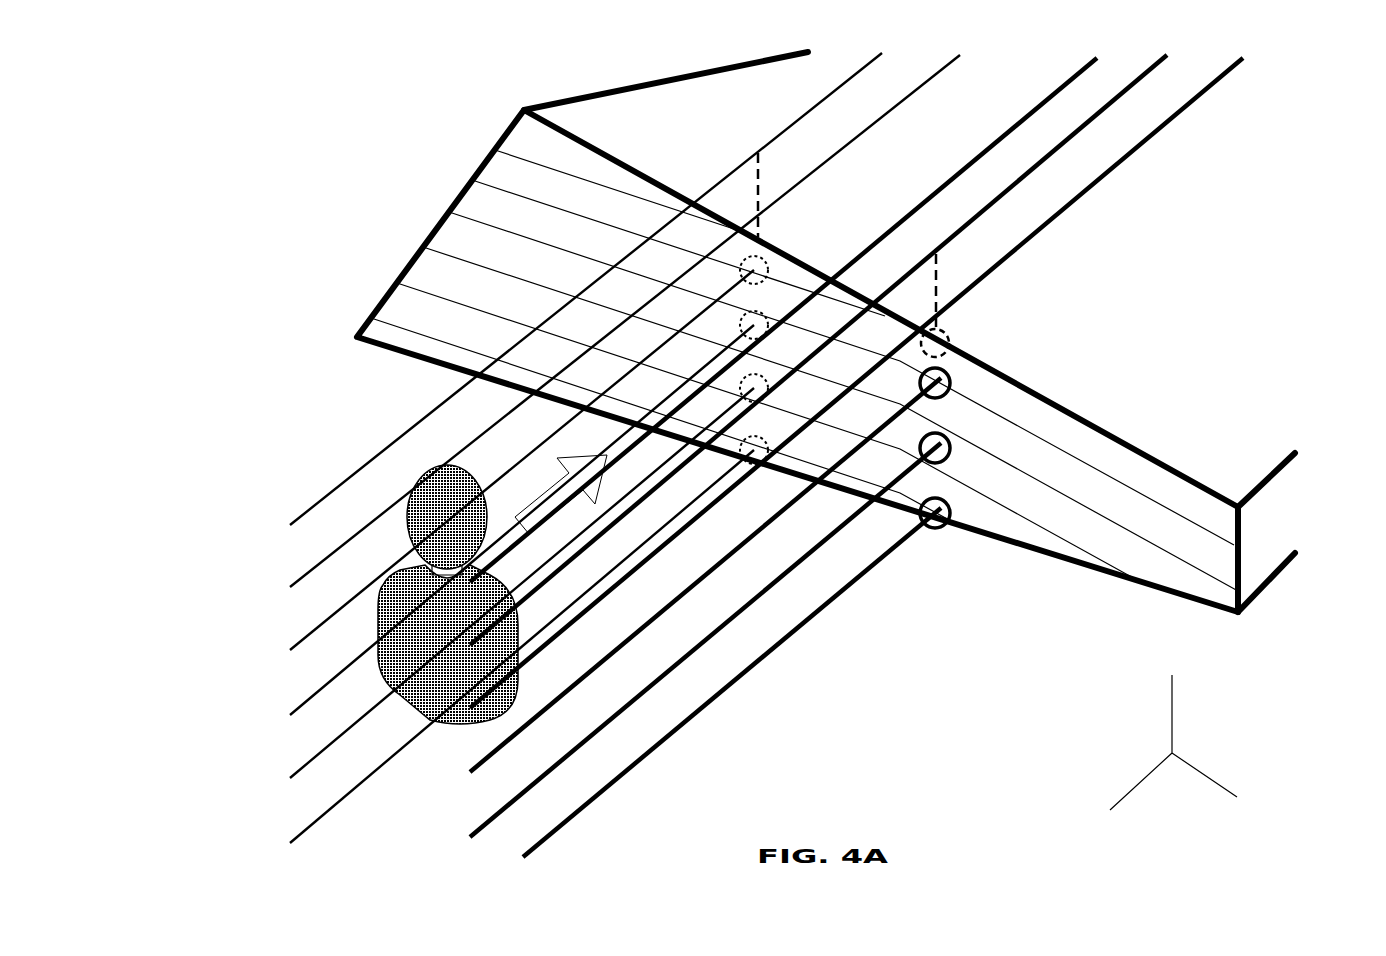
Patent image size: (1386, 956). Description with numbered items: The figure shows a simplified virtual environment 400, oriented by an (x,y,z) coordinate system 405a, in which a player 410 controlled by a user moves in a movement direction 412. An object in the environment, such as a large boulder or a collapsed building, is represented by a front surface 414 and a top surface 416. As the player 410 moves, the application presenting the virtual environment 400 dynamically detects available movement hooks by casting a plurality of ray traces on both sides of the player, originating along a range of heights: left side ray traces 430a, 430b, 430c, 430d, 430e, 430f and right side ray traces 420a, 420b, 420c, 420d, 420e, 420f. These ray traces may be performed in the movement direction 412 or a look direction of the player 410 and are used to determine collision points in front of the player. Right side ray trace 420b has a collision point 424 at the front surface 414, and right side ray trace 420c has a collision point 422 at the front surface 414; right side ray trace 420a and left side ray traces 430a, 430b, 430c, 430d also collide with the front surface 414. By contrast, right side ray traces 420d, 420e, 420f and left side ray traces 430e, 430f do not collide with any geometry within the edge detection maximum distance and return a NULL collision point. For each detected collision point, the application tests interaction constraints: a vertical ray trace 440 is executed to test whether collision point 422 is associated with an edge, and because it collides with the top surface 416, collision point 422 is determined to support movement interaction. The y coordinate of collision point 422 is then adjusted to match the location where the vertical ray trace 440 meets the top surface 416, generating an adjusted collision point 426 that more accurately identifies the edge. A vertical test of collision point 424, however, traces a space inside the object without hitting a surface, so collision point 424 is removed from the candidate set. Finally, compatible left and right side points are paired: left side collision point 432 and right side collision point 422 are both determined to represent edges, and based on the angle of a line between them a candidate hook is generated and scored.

The virtual environment 400 is at (775, 332).
The coordinate system 405a is at (1135, 743).
The player 410 is at (388, 620).
The movement direction 412 is at (568, 484).
The front surface 414 is at (520, 269).
The top surface 416 is at (1115, 292).
The right side ray trace 420a is at (521, 856).
The right side ray trace 420b is at (464, 836).
The right side ray trace 420c is at (464, 772).
The right side ray trace 420d is at (464, 708).
The right side ray trace 420e is at (464, 645).
The right side ray trace 420f is at (464, 582).
The collision point 422 is at (950, 396).
The collision point 424 is at (952, 460).
The adjusted collision point 426 is at (958, 344).
The left side ray trace 430a is at (286, 832).
The left side ray trace 430b is at (286, 767).
The left side ray trace 430c is at (286, 703).
The left side ray trace 430d is at (286, 639).
The left side ray trace 430e is at (286, 576).
The left side ray trace 430f is at (286, 514).
The left side collision point 432 is at (743, 282).
The vertical ray trace 440 is at (937, 282).